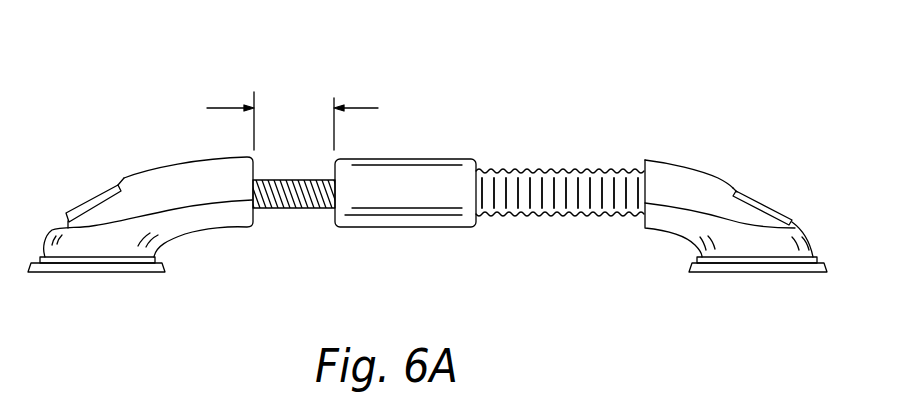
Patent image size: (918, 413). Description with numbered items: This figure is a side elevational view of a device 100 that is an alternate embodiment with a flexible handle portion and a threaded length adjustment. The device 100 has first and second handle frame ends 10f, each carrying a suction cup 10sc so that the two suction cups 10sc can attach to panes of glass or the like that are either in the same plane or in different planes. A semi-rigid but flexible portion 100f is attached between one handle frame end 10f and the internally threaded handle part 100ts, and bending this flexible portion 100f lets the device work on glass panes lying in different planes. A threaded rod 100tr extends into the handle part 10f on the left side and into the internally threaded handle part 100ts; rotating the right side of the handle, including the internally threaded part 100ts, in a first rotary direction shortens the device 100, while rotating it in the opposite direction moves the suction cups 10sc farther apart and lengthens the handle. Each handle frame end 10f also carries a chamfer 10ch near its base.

The handle frame end 10f is at (195, 160).
The chamfer 10ch is at (87, 200).
The suction cup 10sc is at (65, 273).
The device 100 is at (558, 130).
The threaded rod 100tr is at (293, 178).
The internally threaded handle part 100ts is at (410, 170).
The semi-rigid but flexible portion 100f is at (582, 180).